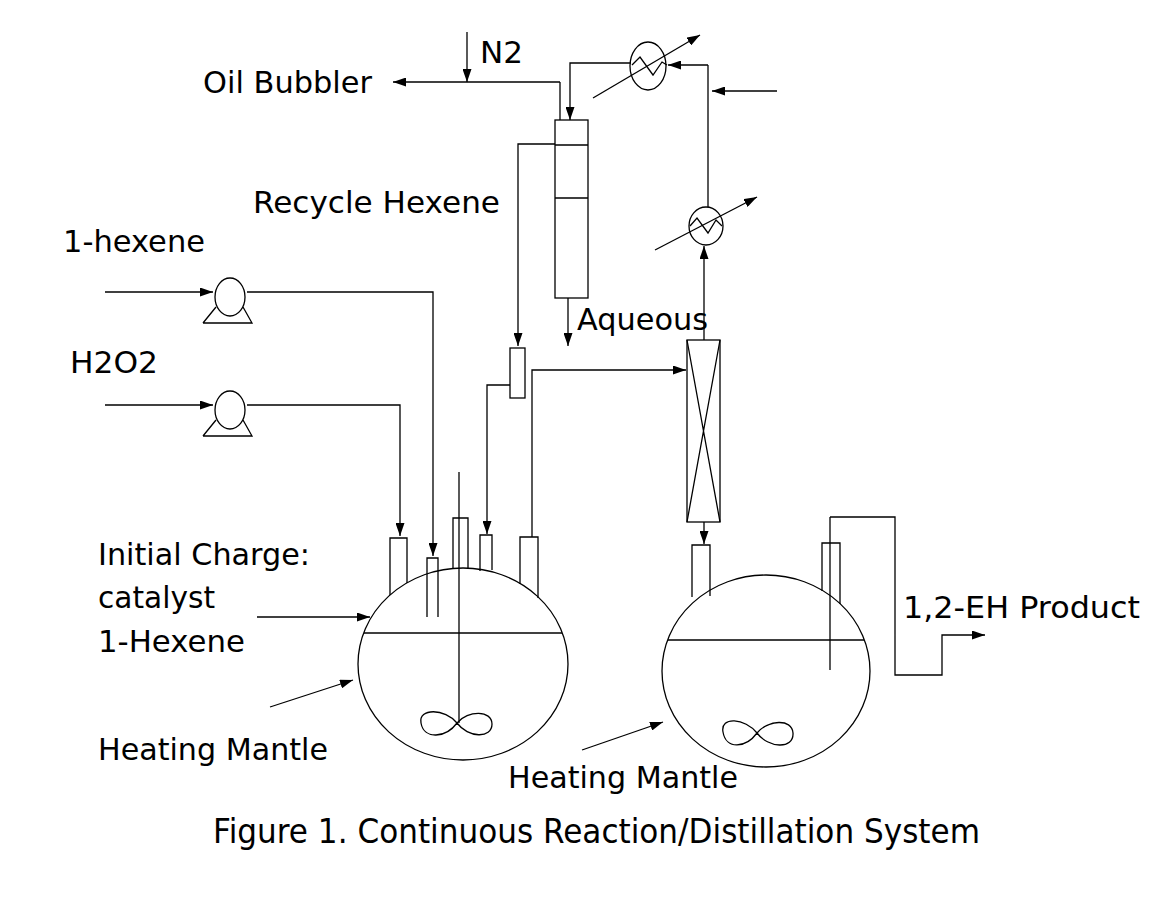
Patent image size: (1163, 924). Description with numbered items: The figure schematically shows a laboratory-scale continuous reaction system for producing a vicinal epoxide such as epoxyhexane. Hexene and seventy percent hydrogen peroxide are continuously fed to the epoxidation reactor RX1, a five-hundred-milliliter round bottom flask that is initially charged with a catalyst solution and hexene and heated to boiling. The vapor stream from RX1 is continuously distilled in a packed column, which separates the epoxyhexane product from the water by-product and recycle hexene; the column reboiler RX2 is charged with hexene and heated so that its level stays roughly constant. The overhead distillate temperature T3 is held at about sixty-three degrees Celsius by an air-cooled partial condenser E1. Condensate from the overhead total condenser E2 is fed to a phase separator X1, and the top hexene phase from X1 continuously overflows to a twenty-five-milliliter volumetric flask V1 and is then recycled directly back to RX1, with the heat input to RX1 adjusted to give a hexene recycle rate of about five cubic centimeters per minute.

The epoxidation reactor RX1 is at (463, 616).
The column reboiler RX2 is at (766, 642).
The air-cooled partial condenser E1 is at (727, 228).
The overhead total condenser E2 is at (646, 84).
The volumetric flask V1 is at (489, 368).
The phase separator X1 is at (591, 209).
The overhead distillate temperature T3 is at (773, 94).